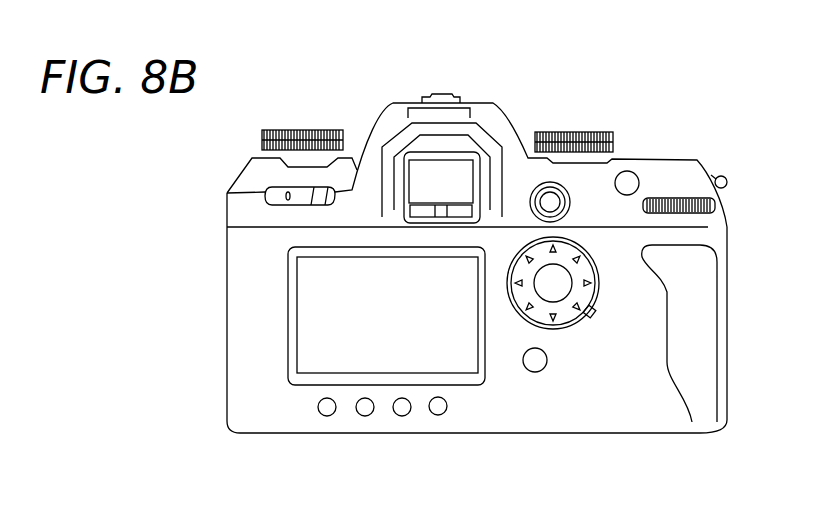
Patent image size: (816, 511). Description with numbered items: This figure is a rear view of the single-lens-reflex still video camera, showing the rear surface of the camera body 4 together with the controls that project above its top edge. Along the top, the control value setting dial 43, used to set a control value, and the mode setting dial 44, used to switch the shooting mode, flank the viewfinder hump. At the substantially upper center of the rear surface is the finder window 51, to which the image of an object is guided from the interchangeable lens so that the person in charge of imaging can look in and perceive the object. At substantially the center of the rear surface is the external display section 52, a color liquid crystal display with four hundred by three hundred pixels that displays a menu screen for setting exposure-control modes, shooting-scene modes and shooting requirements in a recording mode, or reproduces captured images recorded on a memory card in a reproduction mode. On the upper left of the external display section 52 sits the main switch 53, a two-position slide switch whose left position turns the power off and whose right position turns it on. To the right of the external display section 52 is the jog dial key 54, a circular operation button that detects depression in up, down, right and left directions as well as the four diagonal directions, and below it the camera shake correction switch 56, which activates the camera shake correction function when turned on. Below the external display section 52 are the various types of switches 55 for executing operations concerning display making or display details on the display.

The camera body 4 is at (253, 277).
The control value setting dial 43 is at (322, 137).
The mode setting dial 44 is at (603, 133).
The finder window 51 is at (443, 170).
The external display section 52 is at (353, 348).
The main switch 53 is at (266, 192).
The jog dial key 54 is at (583, 323).
The various types of switches 55 is at (452, 447).
The camera shake correction switch 56 is at (533, 370).